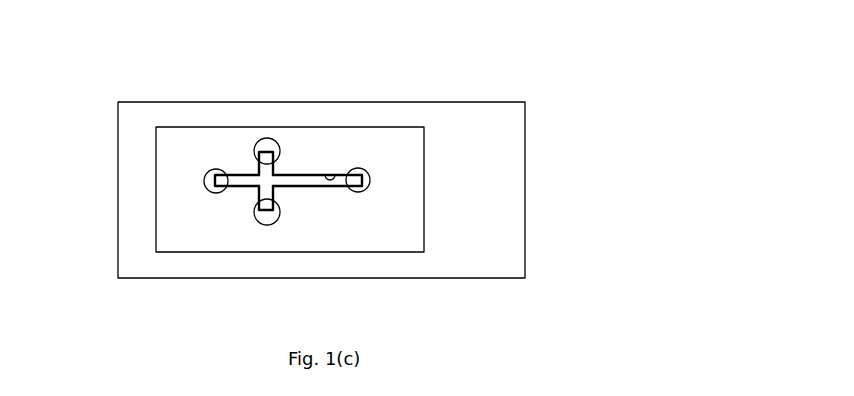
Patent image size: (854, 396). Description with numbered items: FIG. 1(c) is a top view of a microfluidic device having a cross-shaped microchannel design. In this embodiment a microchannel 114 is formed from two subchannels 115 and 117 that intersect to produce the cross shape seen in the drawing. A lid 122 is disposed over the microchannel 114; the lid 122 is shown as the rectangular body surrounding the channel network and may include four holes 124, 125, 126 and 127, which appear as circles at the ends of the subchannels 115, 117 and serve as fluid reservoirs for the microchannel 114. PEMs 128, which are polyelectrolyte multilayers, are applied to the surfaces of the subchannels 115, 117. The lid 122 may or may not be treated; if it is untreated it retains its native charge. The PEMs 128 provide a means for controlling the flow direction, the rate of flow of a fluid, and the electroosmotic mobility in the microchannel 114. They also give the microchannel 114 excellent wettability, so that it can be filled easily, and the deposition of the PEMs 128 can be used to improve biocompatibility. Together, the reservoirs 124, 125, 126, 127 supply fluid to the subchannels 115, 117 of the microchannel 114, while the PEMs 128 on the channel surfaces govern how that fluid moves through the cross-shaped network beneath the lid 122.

The microchannel 114 is at (235, 186).
The subchannel 115 is at (298, 173).
The subchannel 117 is at (274, 172).
The lid 122 is at (398, 227).
The hole 124 is at (204, 189).
The hole 125 is at (258, 223).
The hole 126 is at (370, 177).
The hole 127 is at (265, 138).
The PEMs 128 is at (334, 177).